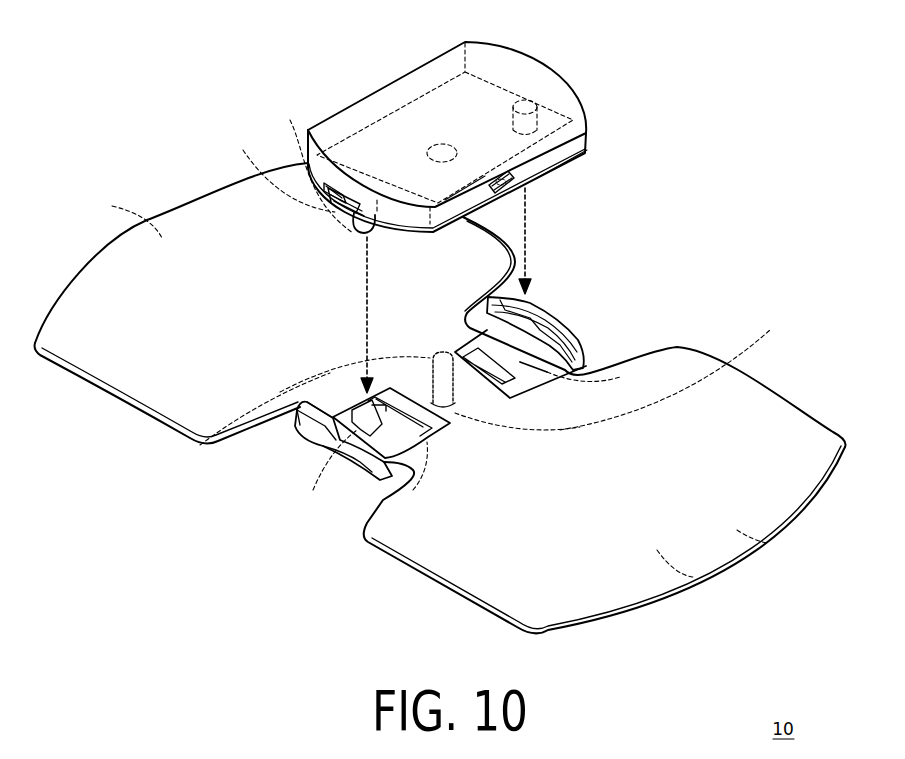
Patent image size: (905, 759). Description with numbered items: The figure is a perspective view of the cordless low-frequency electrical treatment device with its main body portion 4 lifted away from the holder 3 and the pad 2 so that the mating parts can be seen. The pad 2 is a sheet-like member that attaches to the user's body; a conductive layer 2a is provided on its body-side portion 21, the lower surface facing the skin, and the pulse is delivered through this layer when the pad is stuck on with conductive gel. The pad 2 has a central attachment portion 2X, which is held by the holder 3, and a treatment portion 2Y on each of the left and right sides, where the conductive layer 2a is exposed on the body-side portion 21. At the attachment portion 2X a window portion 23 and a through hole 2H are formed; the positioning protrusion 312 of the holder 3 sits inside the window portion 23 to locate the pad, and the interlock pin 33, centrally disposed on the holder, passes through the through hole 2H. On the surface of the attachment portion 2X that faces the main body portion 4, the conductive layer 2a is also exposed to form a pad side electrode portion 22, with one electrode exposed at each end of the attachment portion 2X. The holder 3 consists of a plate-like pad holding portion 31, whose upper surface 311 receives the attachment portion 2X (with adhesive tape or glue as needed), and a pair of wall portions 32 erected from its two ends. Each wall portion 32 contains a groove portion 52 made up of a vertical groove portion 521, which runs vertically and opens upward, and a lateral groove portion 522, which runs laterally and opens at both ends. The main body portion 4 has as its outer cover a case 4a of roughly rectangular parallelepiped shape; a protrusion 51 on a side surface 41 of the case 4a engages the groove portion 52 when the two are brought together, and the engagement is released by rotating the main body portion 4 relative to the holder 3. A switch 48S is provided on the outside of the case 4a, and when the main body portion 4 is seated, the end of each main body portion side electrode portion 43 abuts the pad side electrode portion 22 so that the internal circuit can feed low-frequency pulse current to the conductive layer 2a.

The main body portion 4 is at (457, 118).
The case 4a is at (543, 59).
The main body portion side electrode portion 43 is at (560, 121).
The switch 48S is at (515, 185).
The side surface 41 is at (337, 190).
The protrusion 51 is at (343, 208).
The pad 2 is at (440, 398).
The conductive layer 2a is at (787, 401).
The treatment portion 2Y is at (805, 563).
The through hole 2H is at (718, 378).
The body-side portion 21 is at (693, 577).
The pad side electrode portion 22 is at (565, 372).
The attachment portion 2X is at (433, 440).
The window portion 23 is at (443, 428).
The groove portion 52 is at (589, 296).
The vertical groove portion 521 is at (535, 333).
The lateral groove portion 522 is at (542, 315).
The holder 3 is at (273, 490).
The pad holding portion 31 is at (318, 488).
The upper surface 311 is at (380, 413).
The positioning protrusion 312 is at (392, 408).
The wall portion 32 is at (323, 440).
The interlock pin 33 is at (302, 406).